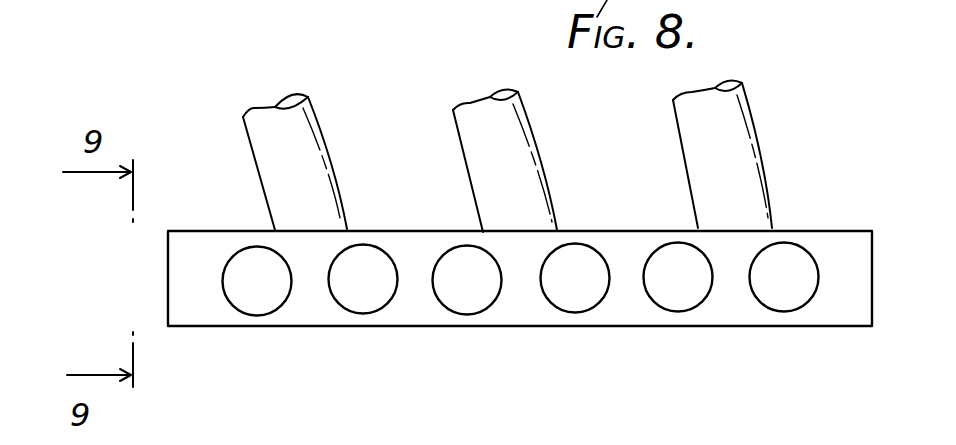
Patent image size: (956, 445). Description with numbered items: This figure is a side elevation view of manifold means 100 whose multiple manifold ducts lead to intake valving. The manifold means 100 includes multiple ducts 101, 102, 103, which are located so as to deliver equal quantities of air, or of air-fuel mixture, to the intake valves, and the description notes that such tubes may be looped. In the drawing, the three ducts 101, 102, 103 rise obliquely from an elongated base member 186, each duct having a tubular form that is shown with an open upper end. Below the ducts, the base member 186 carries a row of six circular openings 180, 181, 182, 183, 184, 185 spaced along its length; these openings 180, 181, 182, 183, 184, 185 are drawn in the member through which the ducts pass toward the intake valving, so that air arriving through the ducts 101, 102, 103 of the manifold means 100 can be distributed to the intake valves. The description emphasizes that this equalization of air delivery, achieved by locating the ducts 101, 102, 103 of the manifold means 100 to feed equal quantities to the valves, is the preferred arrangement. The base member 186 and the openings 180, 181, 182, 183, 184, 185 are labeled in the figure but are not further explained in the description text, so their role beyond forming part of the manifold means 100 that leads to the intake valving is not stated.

The manifold means 100 is at (813, 221).
The duct 101 is at (263, 138).
The duct 102 is at (517, 147).
The duct 103 is at (700, 181).
The base strip 186 is at (410, 237).
The first opening 180 is at (252, 297).
The second opening 181 is at (370, 297).
The third opening 182 is at (473, 302).
The fourth opening 183 is at (582, 300).
The fifth opening 184 is at (682, 300).
The sixth opening 185 is at (795, 295).